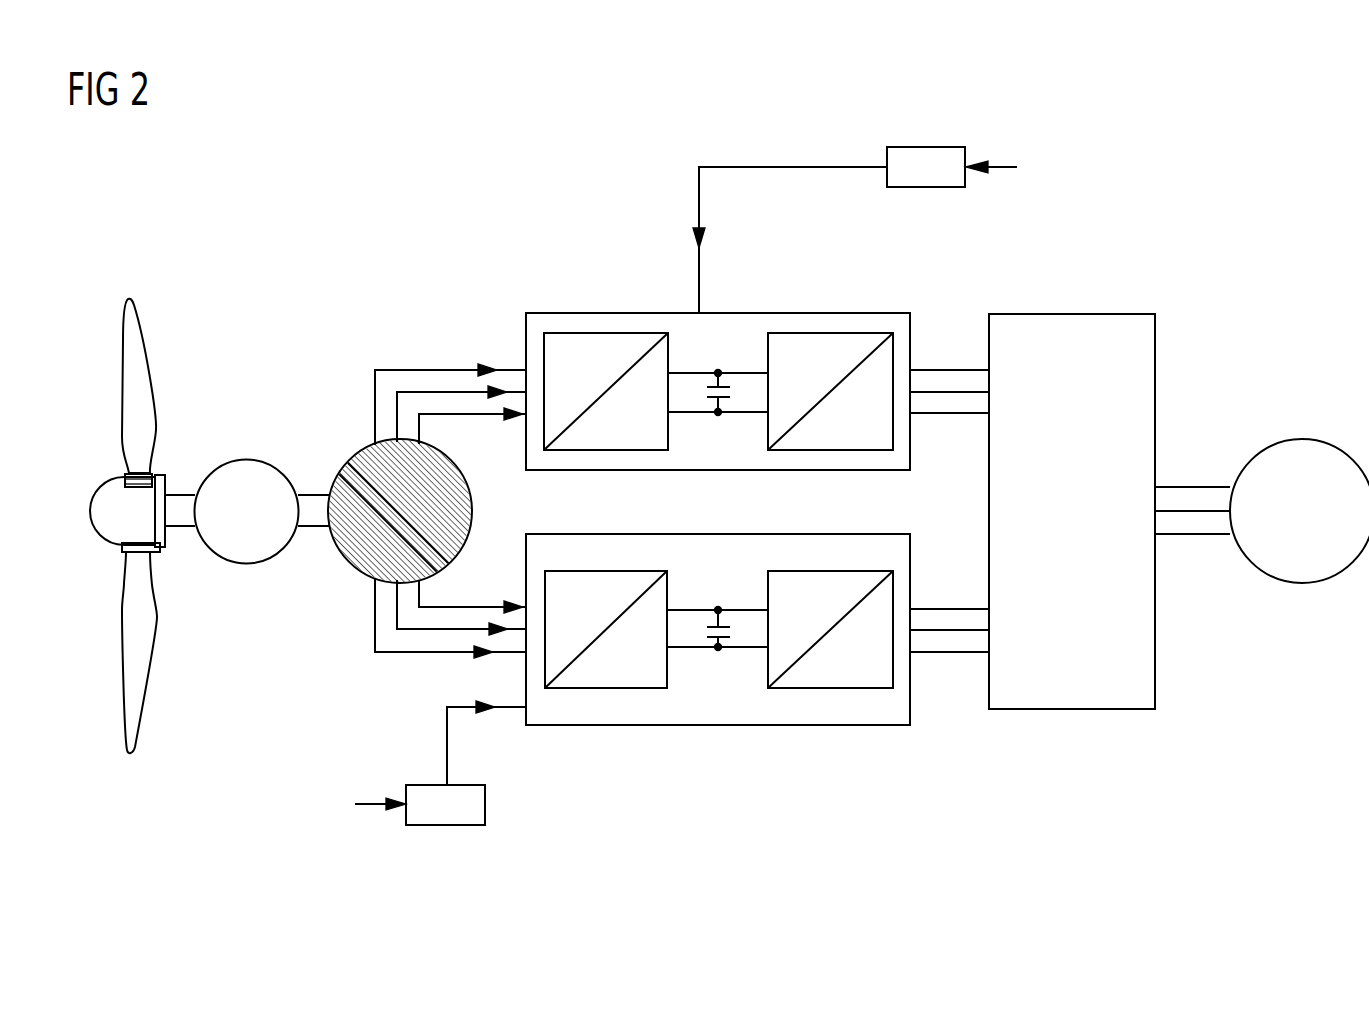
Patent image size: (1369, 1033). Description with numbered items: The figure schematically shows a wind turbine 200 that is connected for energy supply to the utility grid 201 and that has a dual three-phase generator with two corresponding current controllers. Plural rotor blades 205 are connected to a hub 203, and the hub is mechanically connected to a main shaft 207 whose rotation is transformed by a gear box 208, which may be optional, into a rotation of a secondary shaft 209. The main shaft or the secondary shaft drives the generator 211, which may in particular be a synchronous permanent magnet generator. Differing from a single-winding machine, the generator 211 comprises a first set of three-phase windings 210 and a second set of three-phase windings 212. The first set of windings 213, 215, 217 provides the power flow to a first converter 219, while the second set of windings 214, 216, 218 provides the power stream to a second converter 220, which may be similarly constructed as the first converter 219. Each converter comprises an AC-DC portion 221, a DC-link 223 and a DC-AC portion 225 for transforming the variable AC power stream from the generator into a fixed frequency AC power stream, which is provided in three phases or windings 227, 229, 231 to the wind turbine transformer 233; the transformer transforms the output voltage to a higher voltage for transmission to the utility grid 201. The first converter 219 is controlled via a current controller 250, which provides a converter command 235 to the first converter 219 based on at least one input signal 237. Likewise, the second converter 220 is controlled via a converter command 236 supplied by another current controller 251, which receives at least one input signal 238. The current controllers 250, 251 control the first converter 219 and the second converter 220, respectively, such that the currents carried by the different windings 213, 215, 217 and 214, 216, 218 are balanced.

The wind turbine 200 is at (1170, 135).
The utility grid 201 is at (1301, 440).
The hub 203 is at (107, 485).
The rotor blades 205 is at (150, 368).
The main shaft 207 is at (180, 499).
The gear box 208 is at (251, 459).
The secondary shaft 209 is at (306, 500).
The first set of three-phase windings 210 is at (472, 507).
The generator 211 is at (337, 415).
The second set of three-phase windings 212 is at (348, 553).
The winding of the first set 213 is at (419, 414).
The winding of the second set 214 is at (447, 608).
The winding of the first set 215 is at (397, 392).
The winding of the second set 216 is at (405, 632).
The winding of the first set 217 is at (375, 370).
The winding of the second set 218 is at (385, 653).
The first converter 219 is at (786, 313).
The second converter 220 is at (718, 725).
The AC-DC portion 221 is at (604, 333).
The DC-link 223 is at (728, 340).
The DC-AC portion 225 is at (840, 333).
The output phase 227 is at (949, 415).
The output phase 229 is at (949, 391).
The output phase 231 is at (977, 369).
The wind turbine transformer 233 is at (1070, 313).
The converter command 235 is at (695, 238).
The converter command 236 is at (483, 712).
The input signal 237 is at (968, 160).
The input signal 238 is at (407, 797).
The current controller 250 is at (925, 147).
The current controller 251 is at (487, 805).